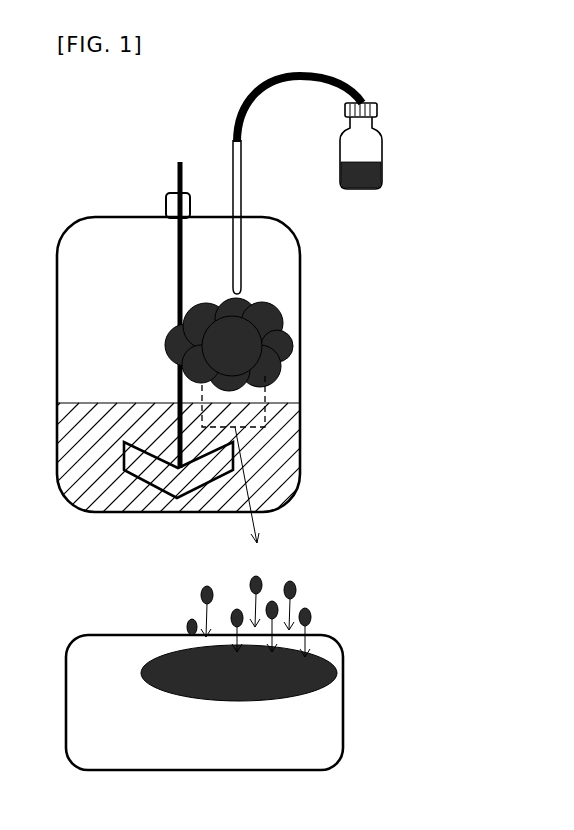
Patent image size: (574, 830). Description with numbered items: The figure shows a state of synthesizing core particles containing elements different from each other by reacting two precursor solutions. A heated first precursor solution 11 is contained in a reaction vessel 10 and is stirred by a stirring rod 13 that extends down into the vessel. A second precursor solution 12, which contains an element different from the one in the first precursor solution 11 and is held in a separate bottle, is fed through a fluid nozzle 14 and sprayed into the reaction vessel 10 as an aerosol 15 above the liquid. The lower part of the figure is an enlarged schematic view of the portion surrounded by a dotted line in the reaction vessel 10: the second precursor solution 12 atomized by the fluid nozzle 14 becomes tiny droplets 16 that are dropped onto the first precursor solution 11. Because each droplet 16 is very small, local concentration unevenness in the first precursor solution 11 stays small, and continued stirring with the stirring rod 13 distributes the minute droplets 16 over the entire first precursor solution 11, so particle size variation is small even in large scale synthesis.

The reaction vessel 10 is at (300, 310).
The first precursor solution 11 is at (295, 455).
The second precursor solution 12 is at (362, 190).
The stirring rod 13 is at (177, 189).
The fluid nozzle 14 is at (241, 190).
The aerosol 15 is at (287, 358).
The droplets 16 is at (338, 548).